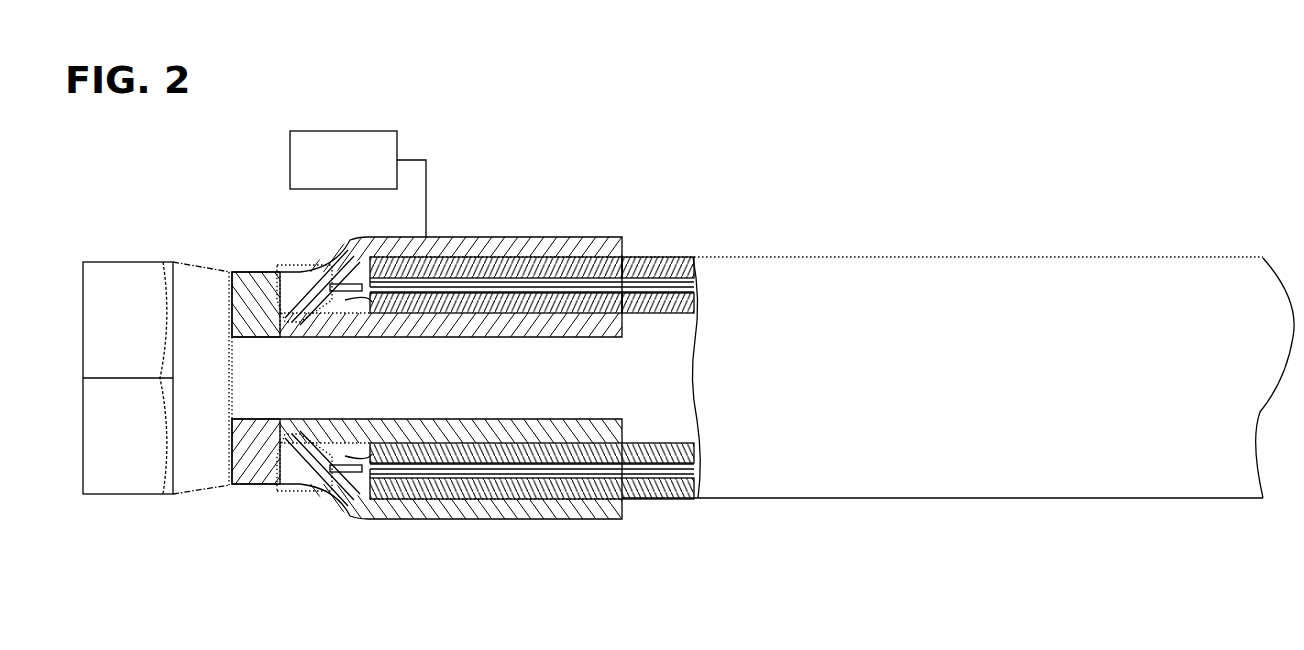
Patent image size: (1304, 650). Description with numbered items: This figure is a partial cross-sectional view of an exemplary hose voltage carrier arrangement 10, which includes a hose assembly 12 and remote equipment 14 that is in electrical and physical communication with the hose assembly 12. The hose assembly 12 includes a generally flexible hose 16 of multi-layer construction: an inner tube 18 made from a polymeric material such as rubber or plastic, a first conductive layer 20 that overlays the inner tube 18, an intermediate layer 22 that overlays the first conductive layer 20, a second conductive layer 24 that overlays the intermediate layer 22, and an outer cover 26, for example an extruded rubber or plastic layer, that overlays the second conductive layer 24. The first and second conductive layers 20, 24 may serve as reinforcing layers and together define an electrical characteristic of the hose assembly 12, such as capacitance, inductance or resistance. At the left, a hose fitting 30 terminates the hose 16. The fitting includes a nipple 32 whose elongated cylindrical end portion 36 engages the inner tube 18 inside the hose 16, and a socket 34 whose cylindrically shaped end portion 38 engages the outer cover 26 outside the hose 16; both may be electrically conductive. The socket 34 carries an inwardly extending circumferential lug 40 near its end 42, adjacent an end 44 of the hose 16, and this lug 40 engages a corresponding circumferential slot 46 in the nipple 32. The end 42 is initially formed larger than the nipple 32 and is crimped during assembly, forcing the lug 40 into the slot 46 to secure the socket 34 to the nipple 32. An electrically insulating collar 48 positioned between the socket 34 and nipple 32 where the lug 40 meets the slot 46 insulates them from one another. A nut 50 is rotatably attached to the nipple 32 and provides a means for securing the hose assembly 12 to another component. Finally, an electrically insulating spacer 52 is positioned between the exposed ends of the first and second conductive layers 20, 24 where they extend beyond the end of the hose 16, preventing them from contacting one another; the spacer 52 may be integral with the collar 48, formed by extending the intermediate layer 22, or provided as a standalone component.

The hose voltage carrier arrangement 10 is at (897, 112).
The hose assembly 12 is at (618, 144).
The remote equipment 14 is at (344, 130).
The hose 16 is at (672, 255).
The inner tube 18 is at (660, 441).
The first conductive layer 20 is at (548, 292).
The intermediate layer 22 is at (528, 287).
The second conductive layer 24 is at (470, 278).
The outer cover 26 is at (678, 500).
The hose fitting 30 is at (252, 490).
The nipple 32 is at (500, 340).
The socket 34 is at (479, 520).
The elongated cylindrical end portion 36 is at (562, 318).
The cylindrically shaped end portion 38 is at (594, 519).
The inwardly extending circumferential lug 40 is at (303, 308).
The end of the socket 42 is at (365, 522).
The end of the hose 44 is at (348, 306).
The circumferential slot 46 is at (300, 443).
The electrically insulating collar 48 is at (283, 466).
The nut 50 is at (129, 494).
The electrically insulating spacer 52 is at (343, 467).